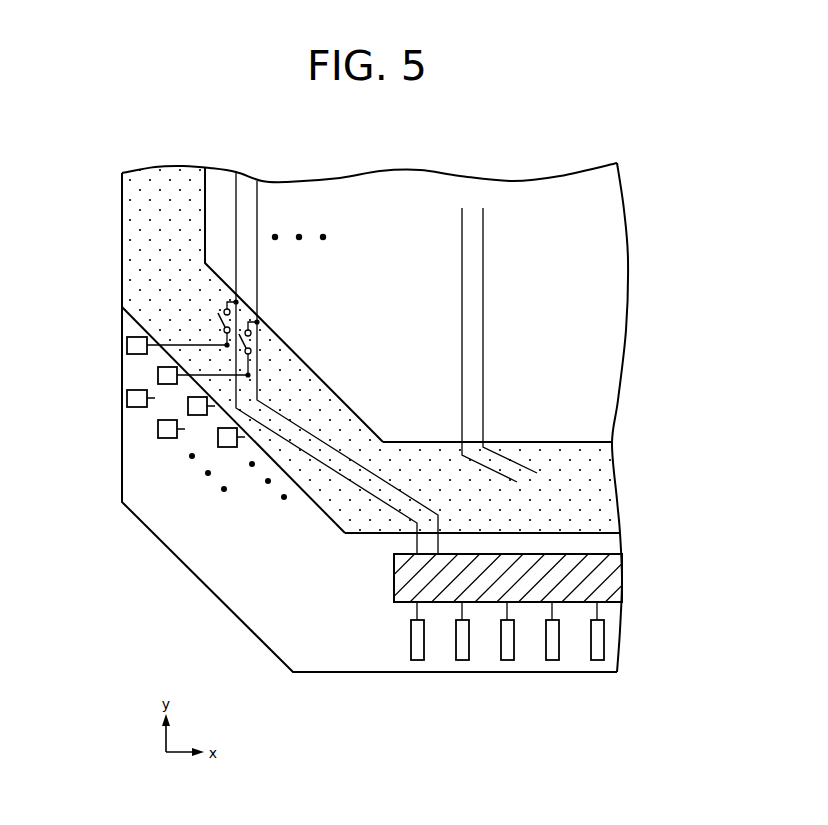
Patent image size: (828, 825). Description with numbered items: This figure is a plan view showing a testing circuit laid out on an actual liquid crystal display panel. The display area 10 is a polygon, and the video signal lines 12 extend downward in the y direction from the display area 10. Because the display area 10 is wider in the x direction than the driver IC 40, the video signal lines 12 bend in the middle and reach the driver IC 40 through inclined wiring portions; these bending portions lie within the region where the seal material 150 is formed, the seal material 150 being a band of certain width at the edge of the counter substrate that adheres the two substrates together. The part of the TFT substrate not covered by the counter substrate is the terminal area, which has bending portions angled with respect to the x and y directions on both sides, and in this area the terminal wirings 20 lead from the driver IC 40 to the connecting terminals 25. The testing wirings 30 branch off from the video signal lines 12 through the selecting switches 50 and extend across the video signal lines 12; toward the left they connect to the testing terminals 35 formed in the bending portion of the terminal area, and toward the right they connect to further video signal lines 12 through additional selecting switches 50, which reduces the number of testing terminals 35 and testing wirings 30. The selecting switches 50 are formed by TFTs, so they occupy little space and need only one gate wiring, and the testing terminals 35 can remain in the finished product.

The display area 10 is at (602, 258).
The video signal lines 12 is at (257, 272).
The terminal wirings 20 is at (413, 612).
The connecting terminals 25 is at (417, 660).
The testing wirings 30 is at (275, 373).
The testing terminals 35 is at (127, 396).
The driver IC 40 is at (603, 580).
The selecting switches 50 is at (217, 318).
The seal material 150 is at (602, 489).